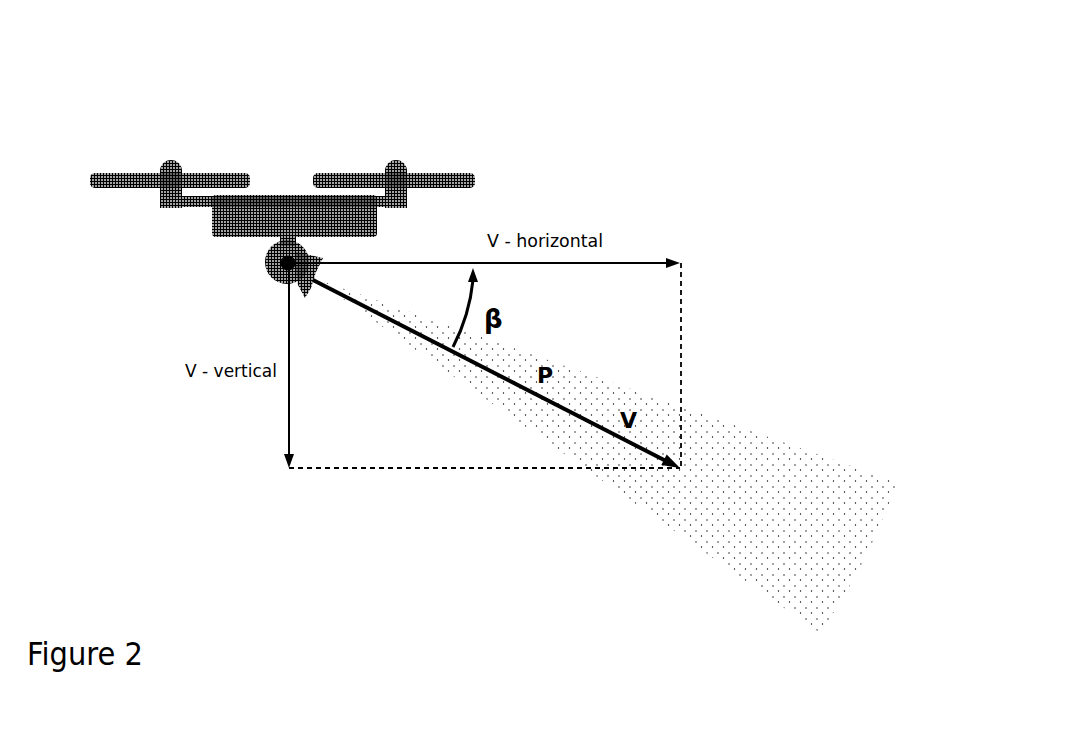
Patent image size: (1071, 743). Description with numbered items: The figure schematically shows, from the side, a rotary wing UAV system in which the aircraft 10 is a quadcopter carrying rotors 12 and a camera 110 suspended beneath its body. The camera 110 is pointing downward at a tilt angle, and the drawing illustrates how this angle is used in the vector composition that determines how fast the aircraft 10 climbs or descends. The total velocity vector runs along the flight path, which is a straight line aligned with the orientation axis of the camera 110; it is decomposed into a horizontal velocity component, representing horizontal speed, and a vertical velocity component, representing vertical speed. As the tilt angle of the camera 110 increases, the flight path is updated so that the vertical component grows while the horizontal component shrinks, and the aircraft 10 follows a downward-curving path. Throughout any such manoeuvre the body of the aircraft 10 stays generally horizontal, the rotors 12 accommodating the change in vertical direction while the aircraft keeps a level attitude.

The aircraft 10 is at (326, 101).
The rotors 12 is at (110, 160).
The camera 110 is at (252, 273).